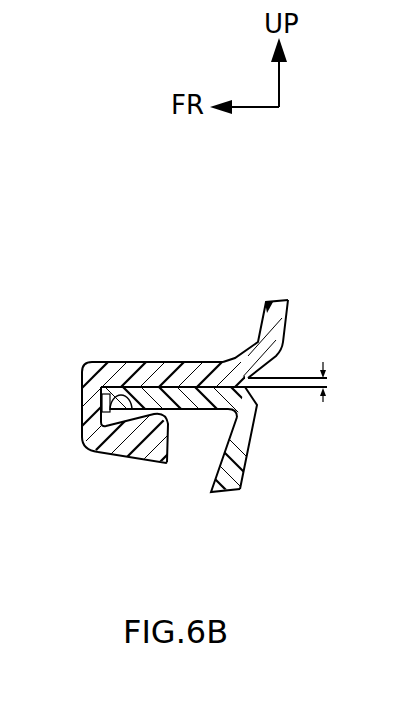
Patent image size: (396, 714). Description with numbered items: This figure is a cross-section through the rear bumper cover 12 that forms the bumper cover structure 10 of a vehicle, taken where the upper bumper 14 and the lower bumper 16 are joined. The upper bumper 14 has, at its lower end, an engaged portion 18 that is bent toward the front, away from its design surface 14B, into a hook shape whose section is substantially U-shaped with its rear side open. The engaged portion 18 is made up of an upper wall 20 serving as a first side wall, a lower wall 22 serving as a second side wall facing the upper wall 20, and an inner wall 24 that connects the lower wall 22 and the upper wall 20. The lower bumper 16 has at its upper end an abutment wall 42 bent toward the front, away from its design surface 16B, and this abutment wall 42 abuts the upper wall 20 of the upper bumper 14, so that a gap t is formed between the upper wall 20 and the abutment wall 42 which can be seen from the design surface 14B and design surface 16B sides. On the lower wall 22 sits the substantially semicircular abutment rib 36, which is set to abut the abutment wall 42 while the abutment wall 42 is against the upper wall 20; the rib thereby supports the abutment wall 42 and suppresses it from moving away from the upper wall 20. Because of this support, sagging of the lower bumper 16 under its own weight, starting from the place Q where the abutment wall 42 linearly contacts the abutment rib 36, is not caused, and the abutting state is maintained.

The bumper cover structure 10 is at (198, 381).
The rear bumper cover 12 is at (284, 230).
The upper bumper 14 is at (306, 304).
The design surface 14B is at (290, 329).
The lower bumper 16 is at (258, 477).
The design surface 16B is at (251, 444).
The engaged portion 18 is at (92, 463).
The upper wall 20 is at (207, 364).
The lower wall 22 is at (127, 453).
The inner wall 24 is at (85, 397).
The abutment rib 36 is at (177, 412).
The abutment wall 42 is at (188, 402).
The place Q is at (110, 396).
The gap t is at (330, 383).